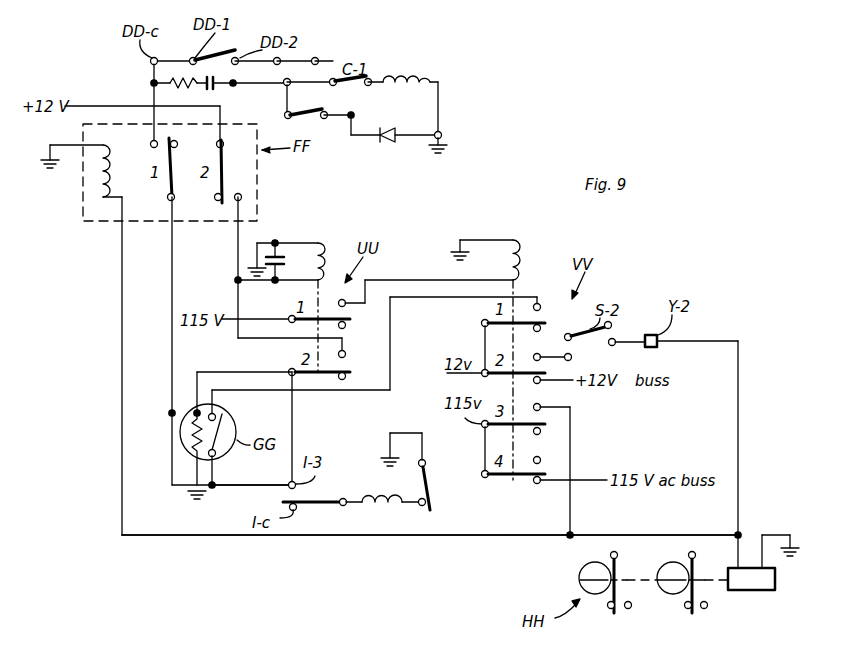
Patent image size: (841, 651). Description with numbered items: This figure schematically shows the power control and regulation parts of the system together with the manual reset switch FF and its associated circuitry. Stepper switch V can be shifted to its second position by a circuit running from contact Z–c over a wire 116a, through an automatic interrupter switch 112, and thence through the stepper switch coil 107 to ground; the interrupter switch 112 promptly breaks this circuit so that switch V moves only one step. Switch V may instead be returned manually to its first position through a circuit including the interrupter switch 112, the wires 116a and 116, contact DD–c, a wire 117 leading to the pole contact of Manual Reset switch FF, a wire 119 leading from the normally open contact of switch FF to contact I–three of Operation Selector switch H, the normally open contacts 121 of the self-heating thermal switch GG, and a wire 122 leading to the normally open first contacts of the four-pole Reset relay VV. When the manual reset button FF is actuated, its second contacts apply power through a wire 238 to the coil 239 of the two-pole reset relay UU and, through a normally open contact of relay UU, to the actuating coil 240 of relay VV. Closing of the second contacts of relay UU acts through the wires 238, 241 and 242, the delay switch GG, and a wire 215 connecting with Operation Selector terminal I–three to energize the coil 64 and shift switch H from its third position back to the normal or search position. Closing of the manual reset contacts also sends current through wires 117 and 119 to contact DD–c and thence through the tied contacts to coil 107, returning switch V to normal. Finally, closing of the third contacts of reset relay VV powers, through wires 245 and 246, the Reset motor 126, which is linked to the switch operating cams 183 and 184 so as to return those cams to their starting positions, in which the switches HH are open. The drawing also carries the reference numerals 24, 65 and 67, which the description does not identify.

The transformer 24 is at (108, 224).
The coil 64 is at (382, 505).
The contact 65 is at (315, 505).
The relay armature 67 is at (411, 487).
The stepper switch coil 107 is at (416, 72).
The automatic interrupter switch 112 is at (296, 115).
The wire 116 is at (233, 86).
The wire 116a is at (285, 115).
The wire 117 is at (153, 94).
The wire 119 is at (152, 71).
The normally open contacts of self-heating thermal switch 121 is at (222, 425).
The wire 122 is at (391, 336).
The Reset motor 126 is at (743, 590).
The switch operating cam 183 is at (578, 582).
The switch operating cam 184 is at (670, 597).
The wire 215 is at (240, 486).
The wire 238 is at (237, 240).
The coil of two-pole reset relay 239 is at (324, 250).
The actuating coil of four-pole reset relay 240 is at (518, 258).
The wire 241 is at (236, 300).
The wire 242 is at (293, 419).
The wire 245 is at (571, 430).
The wire 246 is at (147, 537).